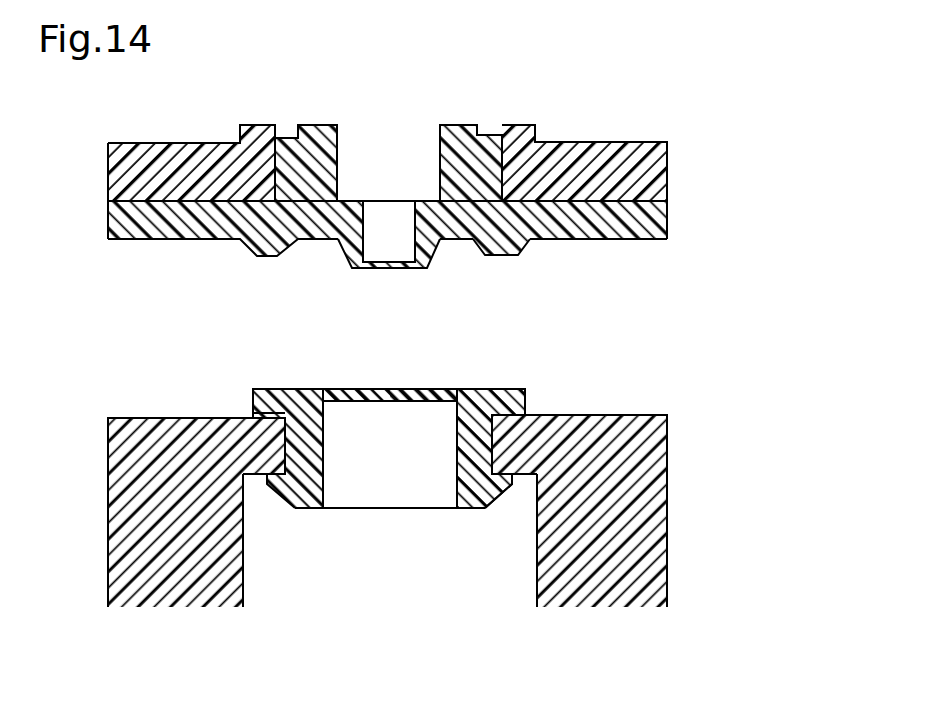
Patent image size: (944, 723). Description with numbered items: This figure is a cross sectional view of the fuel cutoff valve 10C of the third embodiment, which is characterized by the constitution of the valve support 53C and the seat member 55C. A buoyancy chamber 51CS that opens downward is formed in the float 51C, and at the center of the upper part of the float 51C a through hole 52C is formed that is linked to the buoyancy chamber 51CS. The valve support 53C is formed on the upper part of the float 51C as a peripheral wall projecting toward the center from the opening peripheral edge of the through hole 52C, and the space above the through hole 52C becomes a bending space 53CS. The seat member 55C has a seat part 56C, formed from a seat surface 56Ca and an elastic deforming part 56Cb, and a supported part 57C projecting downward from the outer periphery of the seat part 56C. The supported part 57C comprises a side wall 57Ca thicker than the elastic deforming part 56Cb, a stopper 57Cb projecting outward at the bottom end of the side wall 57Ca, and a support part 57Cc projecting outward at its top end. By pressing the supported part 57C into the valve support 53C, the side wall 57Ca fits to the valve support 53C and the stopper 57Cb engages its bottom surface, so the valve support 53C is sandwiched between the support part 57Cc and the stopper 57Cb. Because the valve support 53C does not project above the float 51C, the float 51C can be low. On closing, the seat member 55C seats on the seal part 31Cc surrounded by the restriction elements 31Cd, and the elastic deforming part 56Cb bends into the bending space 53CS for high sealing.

The fuel cutoff valve 10C is at (852, 149).
The seal part 31Cc is at (345, 252).
The restriction elements 31Cd is at (482, 247).
The float 51C is at (642, 460).
The buoyancy chamber 51CS is at (428, 602).
The through hole 52C is at (311, 503).
The valve support 53C is at (253, 452).
The bending space 53CS is at (360, 452).
The seat member 55C is at (827, 270).
The seat part 56C is at (759, 254).
The seat surface 56Ca is at (390, 387).
The elastic deforming part 56Cb is at (440, 387).
The supported part 57C is at (759, 327).
The side wall 57Ca is at (475, 445).
The stopper 57Cb is at (493, 482).
The support part 57Cc is at (539, 417).